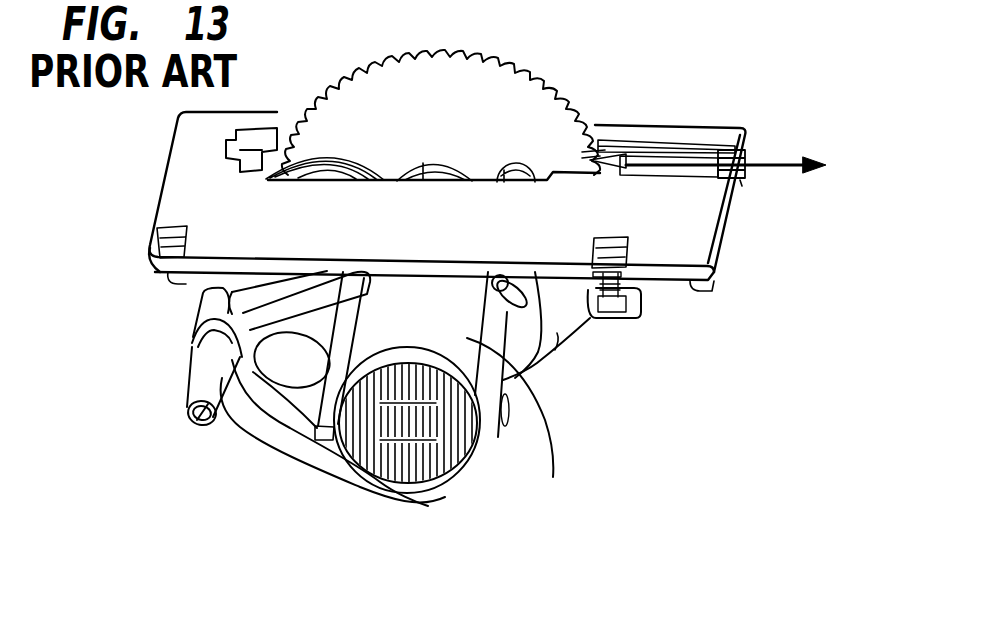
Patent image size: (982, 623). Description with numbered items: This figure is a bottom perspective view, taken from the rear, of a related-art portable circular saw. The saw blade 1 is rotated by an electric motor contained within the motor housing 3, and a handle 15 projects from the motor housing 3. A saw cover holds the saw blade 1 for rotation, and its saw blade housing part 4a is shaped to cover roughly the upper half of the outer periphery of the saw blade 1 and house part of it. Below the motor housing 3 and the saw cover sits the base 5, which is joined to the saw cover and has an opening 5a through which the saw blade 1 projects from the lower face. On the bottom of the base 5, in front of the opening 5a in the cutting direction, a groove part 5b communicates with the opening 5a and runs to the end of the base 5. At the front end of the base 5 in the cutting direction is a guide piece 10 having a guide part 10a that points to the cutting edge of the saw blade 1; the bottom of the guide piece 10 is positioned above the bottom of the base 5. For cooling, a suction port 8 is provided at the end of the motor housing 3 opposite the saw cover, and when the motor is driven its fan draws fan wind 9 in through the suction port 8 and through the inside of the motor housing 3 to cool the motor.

The saw blade 1 is at (378, 86).
The motor housing 3 is at (518, 380).
The saw blade housing part 4a is at (558, 334).
The base 5 is at (188, 208).
The opening 5a is at (605, 139).
The groove part 5b is at (675, 152).
The suction port 8 is at (445, 481).
The fan wind 9 is at (793, 160).
The guide piece 10 is at (725, 150).
The guide part 10a is at (742, 184).
The handle 15 is at (282, 420).